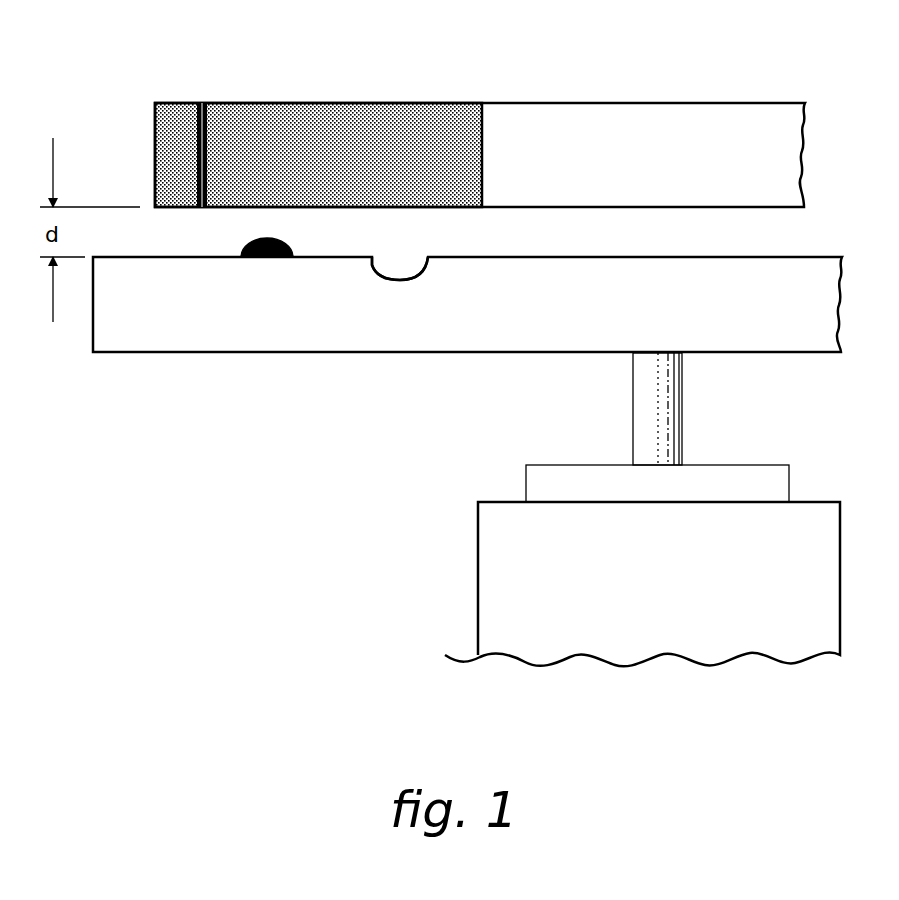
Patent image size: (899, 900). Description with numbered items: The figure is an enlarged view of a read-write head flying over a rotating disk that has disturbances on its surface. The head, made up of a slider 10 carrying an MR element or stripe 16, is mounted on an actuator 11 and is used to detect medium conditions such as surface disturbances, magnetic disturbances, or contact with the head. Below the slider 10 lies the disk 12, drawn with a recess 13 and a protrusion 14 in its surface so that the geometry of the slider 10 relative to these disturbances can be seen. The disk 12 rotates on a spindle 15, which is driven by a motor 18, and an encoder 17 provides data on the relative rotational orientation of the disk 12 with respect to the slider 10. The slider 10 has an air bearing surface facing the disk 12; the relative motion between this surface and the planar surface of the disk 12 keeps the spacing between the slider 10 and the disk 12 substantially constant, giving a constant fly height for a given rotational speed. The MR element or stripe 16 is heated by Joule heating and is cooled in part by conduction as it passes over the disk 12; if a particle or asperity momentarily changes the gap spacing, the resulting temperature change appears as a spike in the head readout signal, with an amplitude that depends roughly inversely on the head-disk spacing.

The slider 10 is at (383, 103).
The actuator 11 is at (653, 103).
The disk 12 is at (247, 342).
The recess 13 is at (398, 272).
The protrusion 14 is at (285, 242).
The spindle 15 is at (682, 418).
The MR element or stripe 16 is at (190, 141).
The encoder 17 is at (526, 474).
The motor 18 is at (478, 553).